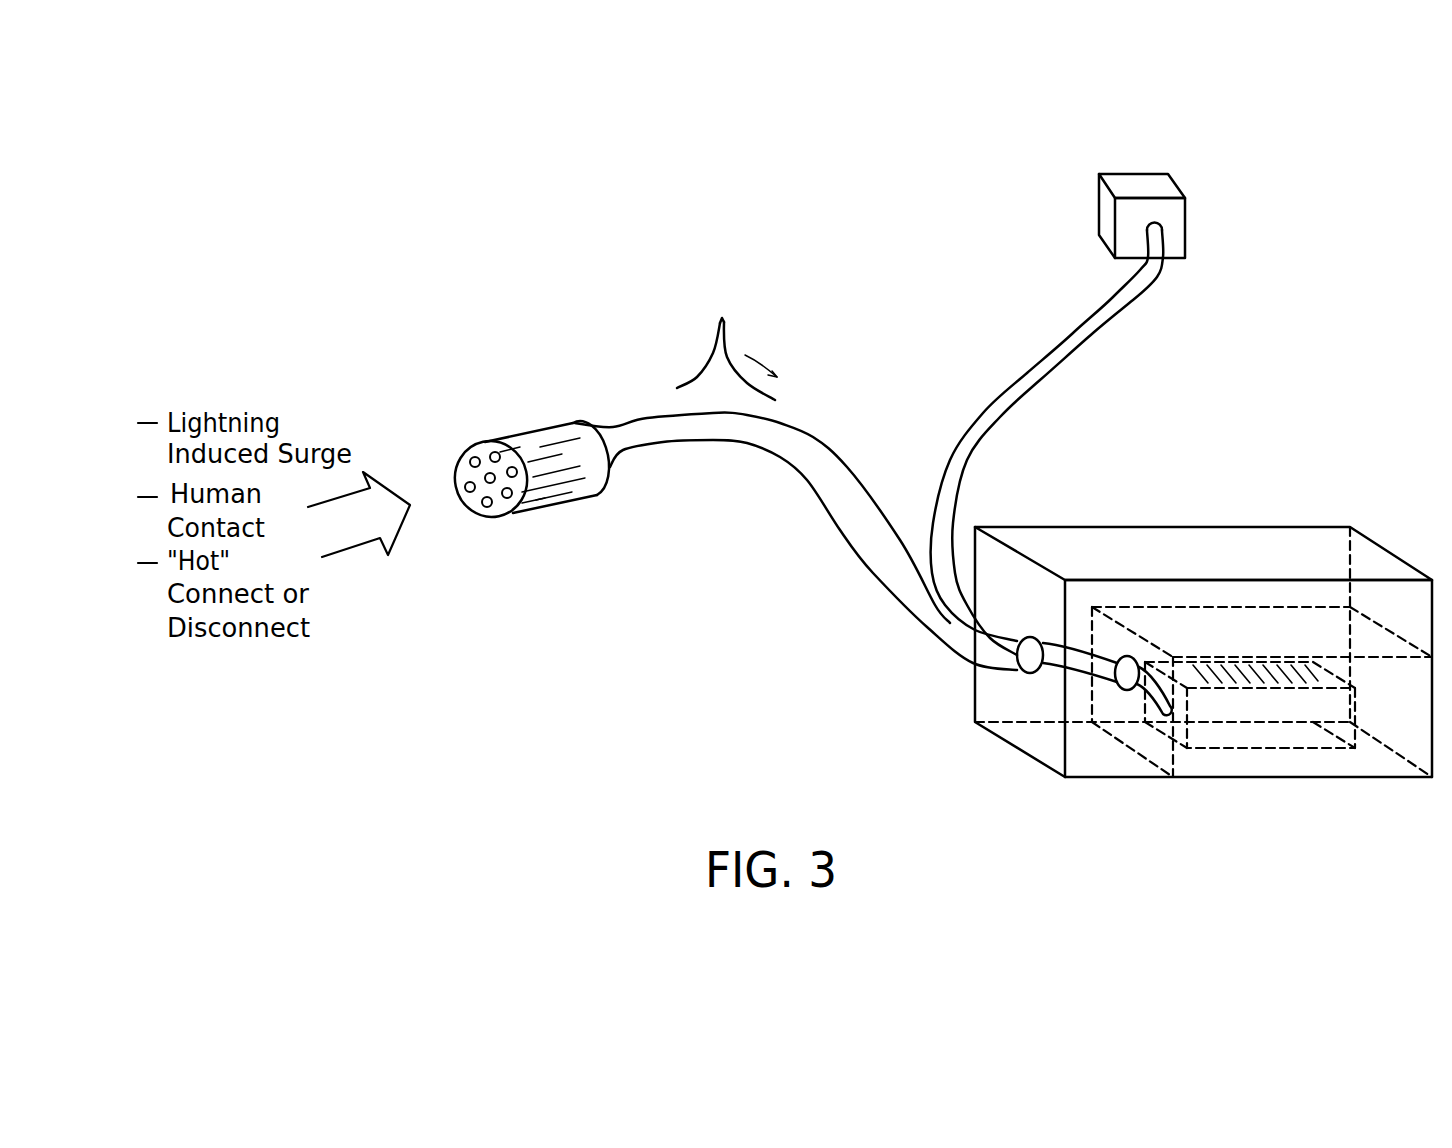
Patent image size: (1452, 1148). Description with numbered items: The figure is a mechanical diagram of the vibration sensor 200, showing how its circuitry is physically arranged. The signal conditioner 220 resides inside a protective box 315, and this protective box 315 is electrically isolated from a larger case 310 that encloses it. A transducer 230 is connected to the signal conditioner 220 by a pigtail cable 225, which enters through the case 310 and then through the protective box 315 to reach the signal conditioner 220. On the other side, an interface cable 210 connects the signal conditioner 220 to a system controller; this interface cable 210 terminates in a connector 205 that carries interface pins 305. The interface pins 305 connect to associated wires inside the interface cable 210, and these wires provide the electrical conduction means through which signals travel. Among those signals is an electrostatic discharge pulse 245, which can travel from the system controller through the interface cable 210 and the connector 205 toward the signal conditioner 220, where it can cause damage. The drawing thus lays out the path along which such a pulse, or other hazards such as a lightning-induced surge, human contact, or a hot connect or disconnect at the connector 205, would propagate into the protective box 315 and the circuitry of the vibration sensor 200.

The vibration sensor 200 is at (868, 160).
The connector 205 is at (527, 430).
The interface cable 210 is at (810, 433).
The signal conditioner 220 is at (1240, 660).
The pigtail cable 225 is at (1077, 343).
The transducer 230 is at (1138, 172).
The electrostatic discharge pulse 245 is at (712, 343).
The interface pins 305 is at (487, 505).
The case 310 is at (1187, 543).
The protective box 315 is at (1142, 618).